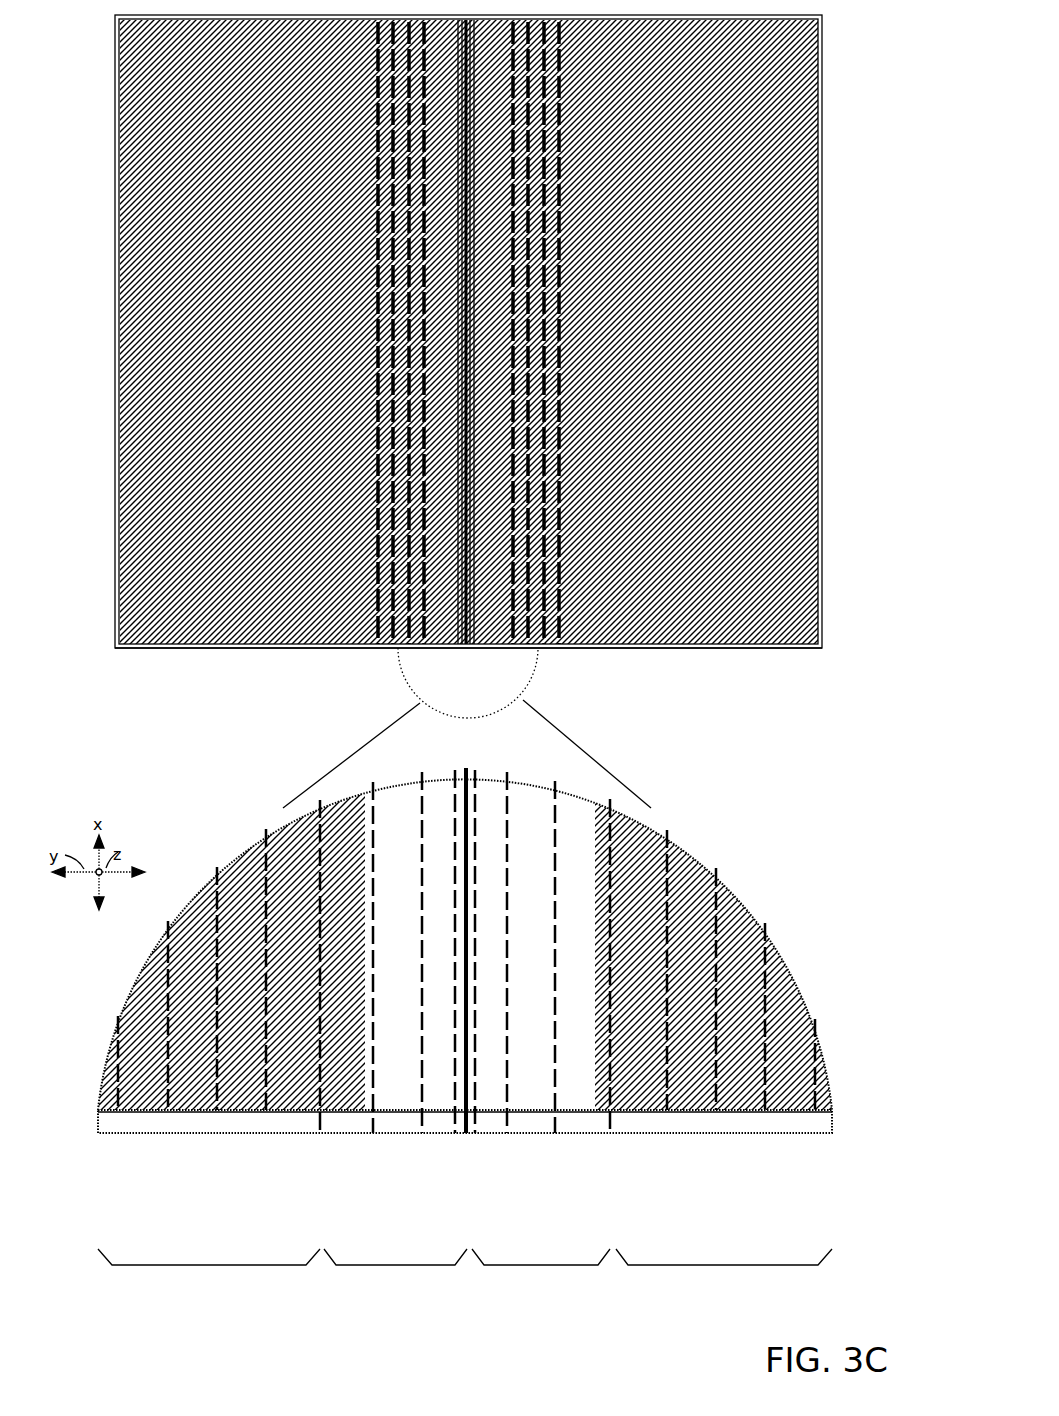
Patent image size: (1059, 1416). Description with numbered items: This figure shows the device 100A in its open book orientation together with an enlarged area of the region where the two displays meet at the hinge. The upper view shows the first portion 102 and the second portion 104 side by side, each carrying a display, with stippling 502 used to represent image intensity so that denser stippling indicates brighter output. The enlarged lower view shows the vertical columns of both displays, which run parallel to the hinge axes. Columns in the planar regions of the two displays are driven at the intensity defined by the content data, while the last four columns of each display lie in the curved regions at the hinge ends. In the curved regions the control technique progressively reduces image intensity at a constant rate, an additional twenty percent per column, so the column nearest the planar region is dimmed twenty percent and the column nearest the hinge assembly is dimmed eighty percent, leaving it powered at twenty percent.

The device 100A is at (824, 37).
The stippling 502 is at (177, 293).
The first portion 102 is at (136, 651).
The second portion 104 is at (788, 650).